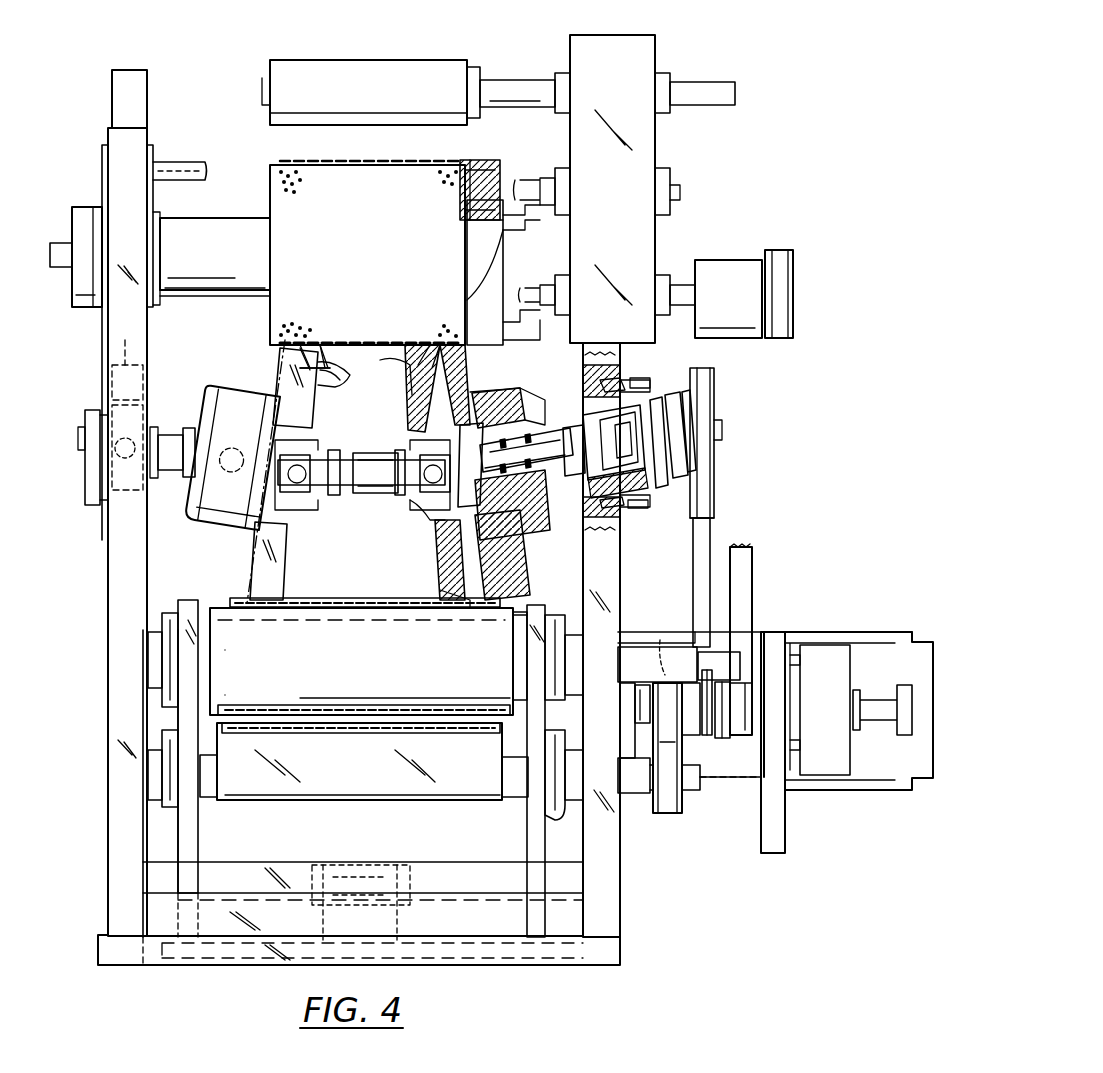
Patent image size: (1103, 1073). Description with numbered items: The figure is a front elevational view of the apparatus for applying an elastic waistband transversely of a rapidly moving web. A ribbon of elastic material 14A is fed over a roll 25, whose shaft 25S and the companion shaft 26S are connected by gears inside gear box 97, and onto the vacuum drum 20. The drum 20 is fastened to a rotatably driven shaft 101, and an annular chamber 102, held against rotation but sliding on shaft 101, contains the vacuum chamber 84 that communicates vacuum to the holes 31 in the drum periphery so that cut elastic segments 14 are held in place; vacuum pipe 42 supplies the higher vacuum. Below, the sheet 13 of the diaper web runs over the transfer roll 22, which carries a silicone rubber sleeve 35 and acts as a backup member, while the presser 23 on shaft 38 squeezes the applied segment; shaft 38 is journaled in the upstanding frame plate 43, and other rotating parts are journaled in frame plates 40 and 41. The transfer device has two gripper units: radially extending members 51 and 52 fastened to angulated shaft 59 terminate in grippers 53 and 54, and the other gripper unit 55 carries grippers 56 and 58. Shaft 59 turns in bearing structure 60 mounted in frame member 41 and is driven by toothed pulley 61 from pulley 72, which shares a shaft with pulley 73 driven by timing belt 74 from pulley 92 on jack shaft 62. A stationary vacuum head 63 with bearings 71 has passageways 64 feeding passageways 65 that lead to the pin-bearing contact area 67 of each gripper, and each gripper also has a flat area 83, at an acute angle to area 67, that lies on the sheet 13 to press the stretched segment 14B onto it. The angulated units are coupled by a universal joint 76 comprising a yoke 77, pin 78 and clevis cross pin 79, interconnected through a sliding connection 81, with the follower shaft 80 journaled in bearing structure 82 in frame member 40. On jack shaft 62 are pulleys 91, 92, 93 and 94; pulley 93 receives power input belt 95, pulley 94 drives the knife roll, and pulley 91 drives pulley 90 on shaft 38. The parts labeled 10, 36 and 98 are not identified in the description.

The lower roller 10 is at (312, 738).
The sheet 13 is at (228, 605).
The elastic segment 14 is at (343, 345).
The elastic ribbon 14A is at (352, 165).
The stretched segment 14B is at (372, 603).
The vacuum drum 20 is at (272, 302).
The transfer roll 22 is at (210, 703).
The segment pressing element 23 is at (375, 800).
The roll 25 is at (392, 65).
The shaft of roll 25 25S is at (512, 85).
The shaft of roll 26 26S is at (532, 170).
The holes 31 is at (283, 172).
The silicone rubber sleeve 35 is at (518, 615).
The shaft 36 is at (62, 245).
The shaft of presser 38 is at (515, 800).
The frame plate 40 is at (108, 830).
The frame plate 41 is at (620, 901).
The vacuum pipe 42 is at (178, 862).
The upstanding frame plate 43 is at (545, 865).
The radially extending member 51 is at (408, 405).
The radially extending member 52 is at (435, 560).
The gripper 53 is at (400, 385).
The gripper 54 is at (440, 595).
The gripper unit 55 is at (240, 540).
The gripper 56 is at (312, 415).
The gripper 58 is at (335, 375).
The shaft 59 is at (553, 438).
The bearing structure 60 is at (590, 482).
The toothed pulley 61 is at (645, 392).
The jack shaft 62 is at (722, 740).
The vacuum head 63 is at (508, 388).
The passageway 64 is at (505, 390).
The vacuum passageways 65 is at (448, 358).
The contact area 67 is at (425, 345).
The bearings 71 is at (535, 430).
The pulley 72 is at (692, 380).
The pulley 73 is at (714, 488).
The timing belt 74 is at (708, 522).
The universal joint 76 is at (358, 505).
The yoke 77 is at (420, 525).
The pin 78 is at (415, 455).
The cross pin 79 is at (425, 498).
The shaft 80 is at (172, 438).
The sliding connection 81 is at (370, 496).
The bearing structure 82 is at (92, 508).
The flat area 83 is at (372, 345).
The vacuum chamber 84 is at (475, 178).
The pulley 90 is at (665, 815).
The pulley 91 is at (665, 645).
The pulley 92 is at (707, 740).
The pulley 93 is at (790, 632).
The pulley 94 is at (752, 736).
The power input belt 95 is at (785, 830).
The gear box 97 is at (655, 40).
The cylinder 98 is at (783, 258).
The shaft 101 is at (490, 285).
The annular chamber 102 is at (505, 330).